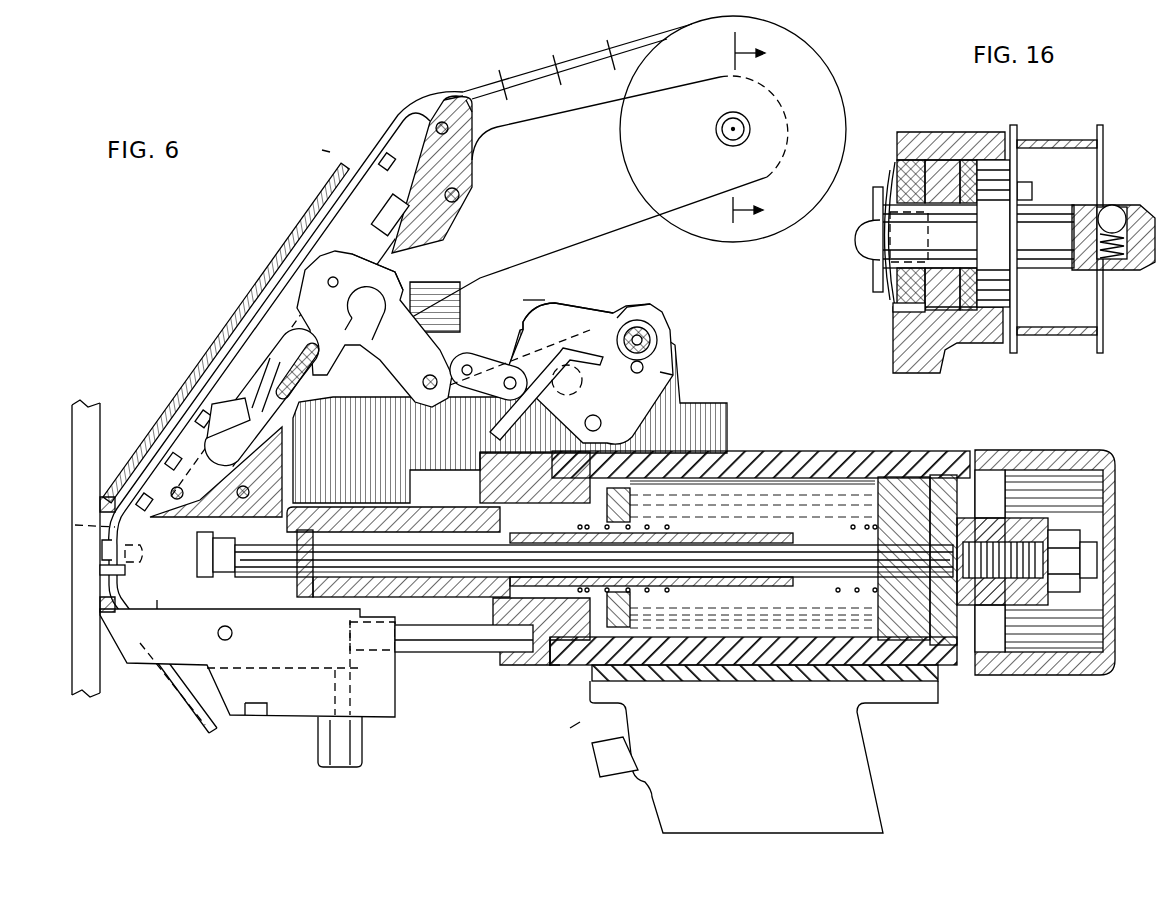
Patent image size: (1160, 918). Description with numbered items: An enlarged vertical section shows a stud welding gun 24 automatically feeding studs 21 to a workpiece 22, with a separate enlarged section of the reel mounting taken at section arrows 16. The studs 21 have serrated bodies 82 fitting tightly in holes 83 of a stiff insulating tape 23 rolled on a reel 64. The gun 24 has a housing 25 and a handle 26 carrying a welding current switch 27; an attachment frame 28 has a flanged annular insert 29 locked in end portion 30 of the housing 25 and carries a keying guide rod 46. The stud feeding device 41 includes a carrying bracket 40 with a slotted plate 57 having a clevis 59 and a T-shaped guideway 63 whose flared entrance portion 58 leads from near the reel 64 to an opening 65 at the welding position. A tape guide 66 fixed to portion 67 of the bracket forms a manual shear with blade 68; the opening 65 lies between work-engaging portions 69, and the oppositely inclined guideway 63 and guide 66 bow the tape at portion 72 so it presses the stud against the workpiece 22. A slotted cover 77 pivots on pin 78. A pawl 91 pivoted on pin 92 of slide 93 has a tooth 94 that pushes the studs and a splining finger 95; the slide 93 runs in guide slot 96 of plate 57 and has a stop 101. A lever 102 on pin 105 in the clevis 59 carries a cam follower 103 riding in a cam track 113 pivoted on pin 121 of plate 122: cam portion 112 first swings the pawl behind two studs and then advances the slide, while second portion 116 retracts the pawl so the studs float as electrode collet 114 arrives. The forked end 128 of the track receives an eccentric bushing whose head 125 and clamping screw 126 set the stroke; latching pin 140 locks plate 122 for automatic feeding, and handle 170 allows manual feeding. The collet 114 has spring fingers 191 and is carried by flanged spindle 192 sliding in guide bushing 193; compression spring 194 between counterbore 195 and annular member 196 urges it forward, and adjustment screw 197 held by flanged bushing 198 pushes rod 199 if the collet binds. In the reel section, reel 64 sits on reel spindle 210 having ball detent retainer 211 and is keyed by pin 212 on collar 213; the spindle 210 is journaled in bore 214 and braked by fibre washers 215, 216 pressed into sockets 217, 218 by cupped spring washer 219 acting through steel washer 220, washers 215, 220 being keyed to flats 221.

In FIG. 6, the section line 16- 16 is at (734, 132).
In FIG. 6, the studs 21 is at (100, 546).
In FIG. 6, the workpiece 22 is at (92, 405).
In FIG. 6, the tape 23 is at (535, 70).
In FIG. 6, the stud welding gun 24 is at (575, 728).
In FIG. 6, the barrel or housing 25 is at (840, 450).
In FIG. 6, the handle 26 is at (870, 786).
In FIG. 6, the welding current controlling switch 27 is at (603, 785).
In FIG. 6, the attachment frame 28 is at (405, 505).
In FIG. 6, the flanged annular insert 29 is at (520, 670).
In FIG. 6, the end portion 30 is at (565, 665).
In FIG. 6, the plate or carrying bracket 40 is at (572, 243).
In FIG. 6, the magazine or stud feeding device 41 is at (327, 150).
In FIG. 6, the keying guide rod 46 is at (412, 655).
In FIG. 6, the slotted plate 57 is at (456, 160).
In FIG. 6, the entrance portion 58 is at (452, 100).
In FIG. 6, the fork or clevis 59 is at (430, 300).
In FIG. 6, the tape and stud guideway 63 is at (413, 127).
In FIG. 6, the reel 64 is at (805, 55).
In FIG. 16, the reel 64 is at (1103, 135).
In FIG. 6, the opening 65 is at (155, 522).
In FIG. 6, the tape guide 66 is at (107, 630).
In FIG. 6, the portion of the bracket 67 is at (170, 633).
In FIG. 6, the blade 68 is at (197, 672).
In FIG. 6, the work-engaging portions 69 is at (95, 505).
In FIG. 6, the bowed portion of the tape 72 is at (103, 570).
In FIG. 6, the slotted guide and cover 77 is at (353, 210).
In FIG. 6, the pin 78 is at (470, 122).
In FIG. 6, the stud body 82 is at (138, 556).
In FIG. 6, the holes 83 is at (73, 518).
In FIG. 6, the feeder finger or pawl 91 is at (290, 295).
In FIG. 6, the pin 92 is at (333, 287).
In FIG. 6, the slide 93 is at (380, 262).
In FIG. 6, the finger or tooth 94 is at (227, 415).
In FIG. 6, the splining finger 95 is at (262, 393).
In FIG. 6, the guide slot 96 is at (390, 258).
In FIG. 6, the stop 101 is at (300, 385).
In FIG. 6, the lever 102 is at (400, 352).
In FIG. 6, the cam follower 103 is at (523, 355).
In FIG. 6, the pin 105 is at (423, 383).
In FIG. 6, the cam portion 112 is at (563, 348).
In FIG. 6, the cam track 113 is at (527, 322).
In FIG. 6, the electrode collet 114 is at (252, 572).
In FIG. 6, the second portion of the cam track 116 is at (572, 318).
In FIG. 6, the pin 121 is at (466, 364).
In FIG. 6, the plate 122 is at (641, 388).
In FIG. 6, the head 125 is at (630, 320).
In FIG. 6, the clamping screw 126 is at (655, 338).
In FIG. 6, the forked end 128 is at (670, 355).
In FIG. 6, the latching pin 140 is at (655, 372).
In FIG. 6, the handle 170 is at (543, 290).
In FIG. 6, the spring fingers 191 is at (200, 562).
In FIG. 6, the flanged spindle 192 is at (318, 518).
In FIG. 6, the flanged guide bushing 193 is at (500, 510).
In FIG. 6, the compression spring 194 is at (700, 590).
In FIG. 6, the counterbore 195 is at (642, 592).
In FIG. 6, the annular member 196 is at (880, 595).
In FIG. 6, the adjustment screw 197 is at (1055, 592).
In FIG. 6, the flanged bushing 198 is at (1005, 598).
In FIG. 6, the rod 199 is at (812, 568).
In FIG. 16, the reel spindle 210 is at (1140, 270).
In FIG. 16, the ball detent retainer 211 is at (1110, 205).
In FIG. 16, the keying pin 212 is at (1033, 186).
In FIG. 16, the collar 213 is at (1022, 138).
In FIG. 16, the bore 214 is at (870, 250).
In FIG. 16, the fibre washer 215 is at (920, 160).
In FIG. 16, the fibre washer 216 is at (975, 160).
In FIG. 16, the counterbore or socket 217 is at (898, 312).
In FIG. 16, the counterbore or socket 218 is at (950, 338).
In FIG. 16, the cupped spring washer 219 is at (886, 298).
In FIG. 16, the steel washer 220 is at (880, 277).
In FIG. 16, the keying flats 221 is at (895, 222).